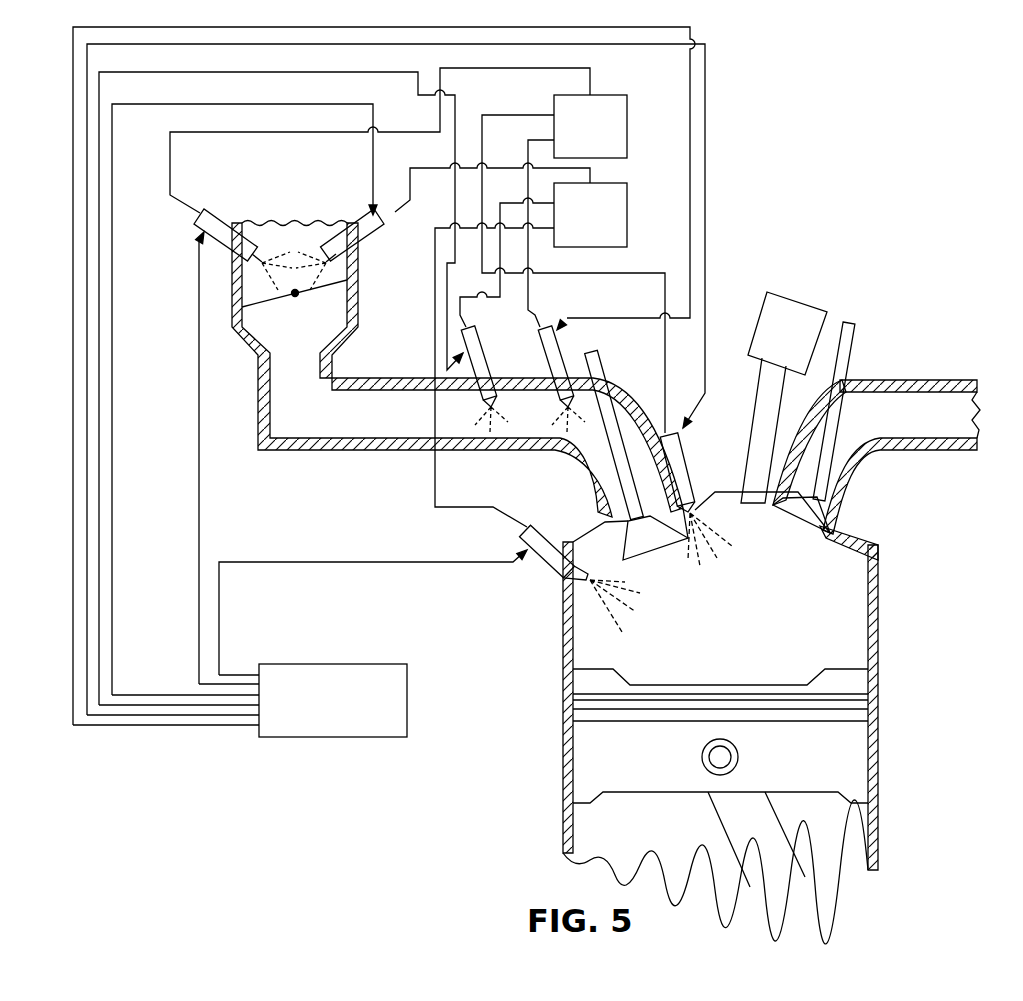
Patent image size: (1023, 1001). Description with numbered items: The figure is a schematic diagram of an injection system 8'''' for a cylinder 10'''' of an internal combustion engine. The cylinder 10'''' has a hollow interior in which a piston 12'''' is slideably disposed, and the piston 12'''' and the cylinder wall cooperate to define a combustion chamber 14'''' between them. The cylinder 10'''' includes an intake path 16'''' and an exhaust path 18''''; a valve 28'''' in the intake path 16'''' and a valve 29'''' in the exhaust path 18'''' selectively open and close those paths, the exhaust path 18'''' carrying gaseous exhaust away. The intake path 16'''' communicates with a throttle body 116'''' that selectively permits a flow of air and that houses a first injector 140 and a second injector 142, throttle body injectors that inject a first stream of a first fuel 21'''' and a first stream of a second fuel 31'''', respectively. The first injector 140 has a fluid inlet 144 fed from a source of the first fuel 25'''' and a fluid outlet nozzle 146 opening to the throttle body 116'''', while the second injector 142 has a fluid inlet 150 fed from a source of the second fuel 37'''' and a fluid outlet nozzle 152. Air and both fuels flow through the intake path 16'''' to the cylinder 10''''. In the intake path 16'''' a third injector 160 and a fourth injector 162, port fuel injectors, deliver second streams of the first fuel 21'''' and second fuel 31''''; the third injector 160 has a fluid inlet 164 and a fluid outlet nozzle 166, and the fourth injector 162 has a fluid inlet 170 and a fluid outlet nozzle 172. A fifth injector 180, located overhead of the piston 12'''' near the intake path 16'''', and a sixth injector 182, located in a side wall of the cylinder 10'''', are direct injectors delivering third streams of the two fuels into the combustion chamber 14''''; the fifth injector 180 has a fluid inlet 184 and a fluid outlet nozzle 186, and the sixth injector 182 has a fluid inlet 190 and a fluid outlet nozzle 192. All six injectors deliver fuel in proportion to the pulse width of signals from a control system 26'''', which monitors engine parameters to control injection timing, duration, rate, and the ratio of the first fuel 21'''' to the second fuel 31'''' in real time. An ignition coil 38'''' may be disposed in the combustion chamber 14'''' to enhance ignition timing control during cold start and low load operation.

The injection system 8'''' is at (841, 155).
The cylinder 10'''' is at (785, 743).
The piston 12'''' is at (791, 778).
The combustion chamber 14'''' is at (729, 645).
The intake path 16'''' is at (422, 370).
The exhaust path 18'''' is at (901, 457).
The first fuel 21'''' is at (524, 427).
The source of the first fuel 25'''' is at (619, 108).
The control system 26'''' is at (383, 700).
The valve 28'''' is at (659, 486).
The valve 29'''' is at (814, 457).
The second fuel 31'''' is at (444, 445).
The source of the second fuel 37'''' is at (619, 198).
The ignition coil 38'''' is at (803, 373).
The throttle body 116'''' is at (338, 297).
The first injector 140 is at (210, 222).
The second injector 142 is at (353, 230).
The fluid inlet 144 is at (200, 210).
The fluid outlet nozzle 146 is at (258, 265).
The fluid inlet 150 is at (491, 177).
The fluid outlet nozzle 152 is at (347, 280).
The third injector 160 is at (553, 355).
The fourth injector 162 is at (478, 358).
The fluid inlet 164 is at (545, 325).
The fluid outlet nozzle 166 is at (565, 408).
The fluid inlet 170 is at (472, 327).
The fluid outlet nozzle 172 is at (488, 406).
The fifth injector 180 is at (728, 390).
The sixth injector 182 is at (548, 542).
The fluid inlet 184 is at (675, 428).
The fluid outlet nozzle 186 is at (717, 527).
The fluid inlet 190 is at (525, 536).
The fluid outlet nozzle 192 is at (592, 578).